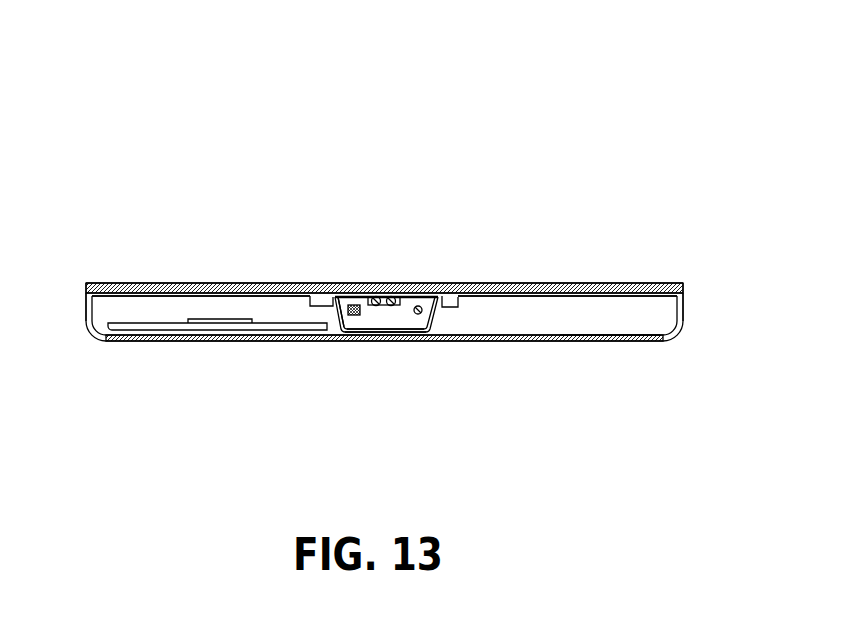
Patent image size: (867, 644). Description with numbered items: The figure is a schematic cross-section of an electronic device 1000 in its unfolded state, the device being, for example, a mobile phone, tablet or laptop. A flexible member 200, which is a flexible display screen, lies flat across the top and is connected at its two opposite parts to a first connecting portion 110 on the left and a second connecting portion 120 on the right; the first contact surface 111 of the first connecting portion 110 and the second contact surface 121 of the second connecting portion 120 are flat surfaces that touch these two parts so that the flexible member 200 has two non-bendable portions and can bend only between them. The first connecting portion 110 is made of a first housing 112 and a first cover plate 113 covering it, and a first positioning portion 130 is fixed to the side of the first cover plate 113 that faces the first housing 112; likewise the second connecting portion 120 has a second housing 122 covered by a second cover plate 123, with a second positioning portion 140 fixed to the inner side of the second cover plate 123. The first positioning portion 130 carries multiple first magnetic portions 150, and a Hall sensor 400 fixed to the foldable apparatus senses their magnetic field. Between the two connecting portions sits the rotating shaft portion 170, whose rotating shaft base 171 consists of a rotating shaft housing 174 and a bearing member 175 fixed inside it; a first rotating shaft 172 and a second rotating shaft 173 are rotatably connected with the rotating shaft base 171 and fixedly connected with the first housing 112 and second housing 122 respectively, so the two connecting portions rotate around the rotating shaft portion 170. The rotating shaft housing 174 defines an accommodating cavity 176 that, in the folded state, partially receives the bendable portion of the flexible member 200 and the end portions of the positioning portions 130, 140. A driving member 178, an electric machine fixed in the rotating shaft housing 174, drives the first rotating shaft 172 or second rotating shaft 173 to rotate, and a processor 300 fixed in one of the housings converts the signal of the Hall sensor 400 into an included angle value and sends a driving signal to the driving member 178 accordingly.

The electronic device 1000 is at (558, 112).
The flexible member 200 is at (559, 284).
The first contact surface 111 is at (142, 284).
The second contact surface 121 is at (637, 284).
The first connecting portion 110 is at (122, 430).
The first housing 112 is at (131, 340).
The first cover plate 113 is at (188, 297).
The processor 300 is at (232, 326).
The second connecting portion 120 is at (582, 441).
The second housing 122 is at (565, 342).
The second cover plate 123 is at (650, 342).
The first positioning portion 130 is at (323, 284).
The second positioning portion 140 is at (450, 300).
The rotating shaft portion 170 is at (393, 330).
The first magnetic portion 150 is at (373, 284).
The driving member 178 is at (370, 297).
The Hall sensor 400 is at (393, 297).
The accommodating cavity 176 is at (345, 312).
The first rotating shaft 172 is at (344, 335).
The second rotating shaft 173 is at (440, 322).
The rotating shaft housing 174 is at (362, 333).
The bearing member 175 is at (420, 333).
The rotating shaft base 171 is at (360, 422).